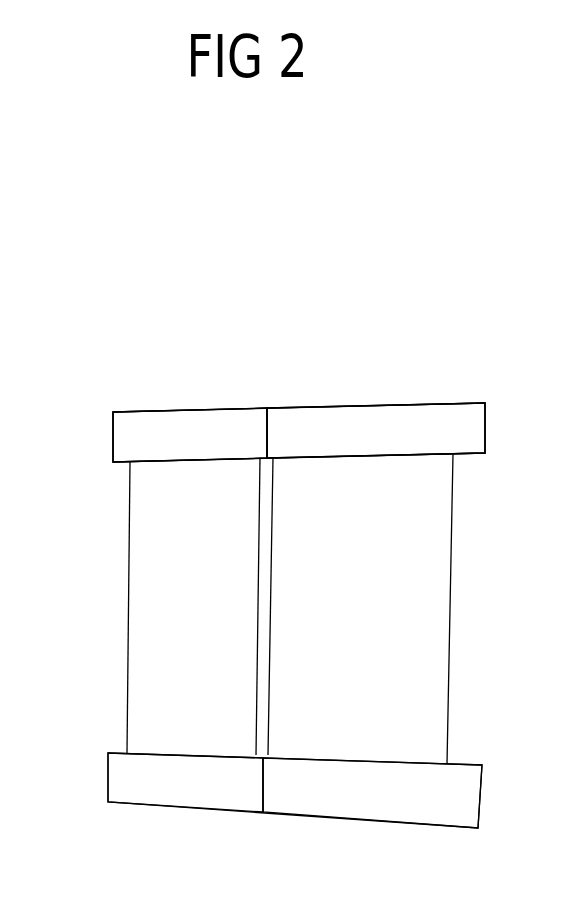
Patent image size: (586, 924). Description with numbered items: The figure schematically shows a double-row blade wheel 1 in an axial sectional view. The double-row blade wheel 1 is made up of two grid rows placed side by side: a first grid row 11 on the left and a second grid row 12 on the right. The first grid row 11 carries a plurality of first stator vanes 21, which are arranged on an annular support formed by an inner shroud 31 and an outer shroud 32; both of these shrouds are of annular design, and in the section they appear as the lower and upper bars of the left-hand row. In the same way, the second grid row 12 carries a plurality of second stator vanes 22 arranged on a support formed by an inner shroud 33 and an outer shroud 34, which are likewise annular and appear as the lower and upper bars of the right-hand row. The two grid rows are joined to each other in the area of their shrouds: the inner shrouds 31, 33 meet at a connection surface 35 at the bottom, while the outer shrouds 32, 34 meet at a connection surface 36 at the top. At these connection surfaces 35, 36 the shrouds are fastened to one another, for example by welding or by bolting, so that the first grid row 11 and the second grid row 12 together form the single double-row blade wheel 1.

The double-row blade wheel 1 is at (440, 350).
The first grid row 11 is at (199, 373).
The second grid row 12 is at (358, 373).
The first stator vanes 21 is at (150, 657).
The second stator vanes 22 is at (428, 595).
The inner shroud 31 is at (168, 790).
The outer shroud 32 is at (170, 435).
The inner shroud 33 is at (370, 797).
The outer shroud 34 is at (333, 432).
The connection surface 35 is at (257, 793).
The connection surface 36 is at (262, 410).